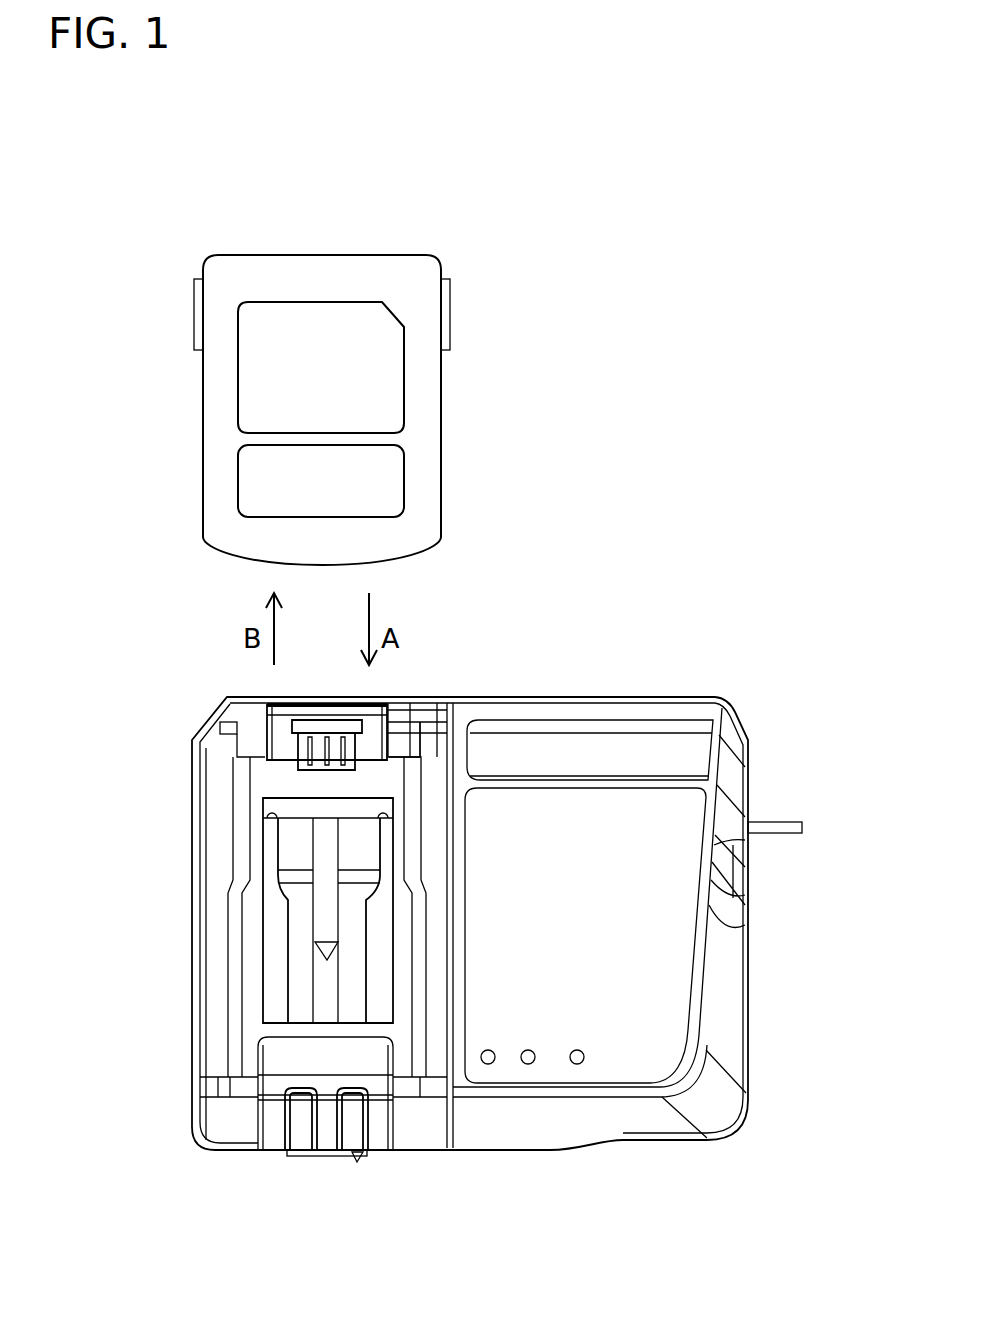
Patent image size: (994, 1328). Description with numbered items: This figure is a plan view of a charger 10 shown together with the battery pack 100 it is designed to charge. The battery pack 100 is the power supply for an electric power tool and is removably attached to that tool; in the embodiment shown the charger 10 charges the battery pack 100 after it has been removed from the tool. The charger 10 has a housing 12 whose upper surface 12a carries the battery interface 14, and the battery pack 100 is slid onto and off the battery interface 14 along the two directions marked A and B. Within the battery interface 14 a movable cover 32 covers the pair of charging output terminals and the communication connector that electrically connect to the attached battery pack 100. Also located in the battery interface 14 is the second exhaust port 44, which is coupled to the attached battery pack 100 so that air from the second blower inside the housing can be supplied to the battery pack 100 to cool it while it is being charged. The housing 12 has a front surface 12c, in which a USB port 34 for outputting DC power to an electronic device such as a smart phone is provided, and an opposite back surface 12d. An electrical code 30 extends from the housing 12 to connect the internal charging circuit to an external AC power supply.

The battery pack 100 is at (432, 185).
The charger 10 is at (722, 626).
The housing 12 is at (732, 735).
The upper surface 12a is at (608, 803).
The front surface 12c is at (493, 1155).
The back surface 12d is at (506, 697).
The battery interface 14 is at (258, 788).
The electrical code 30 is at (787, 827).
The movable cover 32 is at (268, 848).
The USB port 34 is at (313, 1155).
The second exhaust port 44 is at (300, 750).